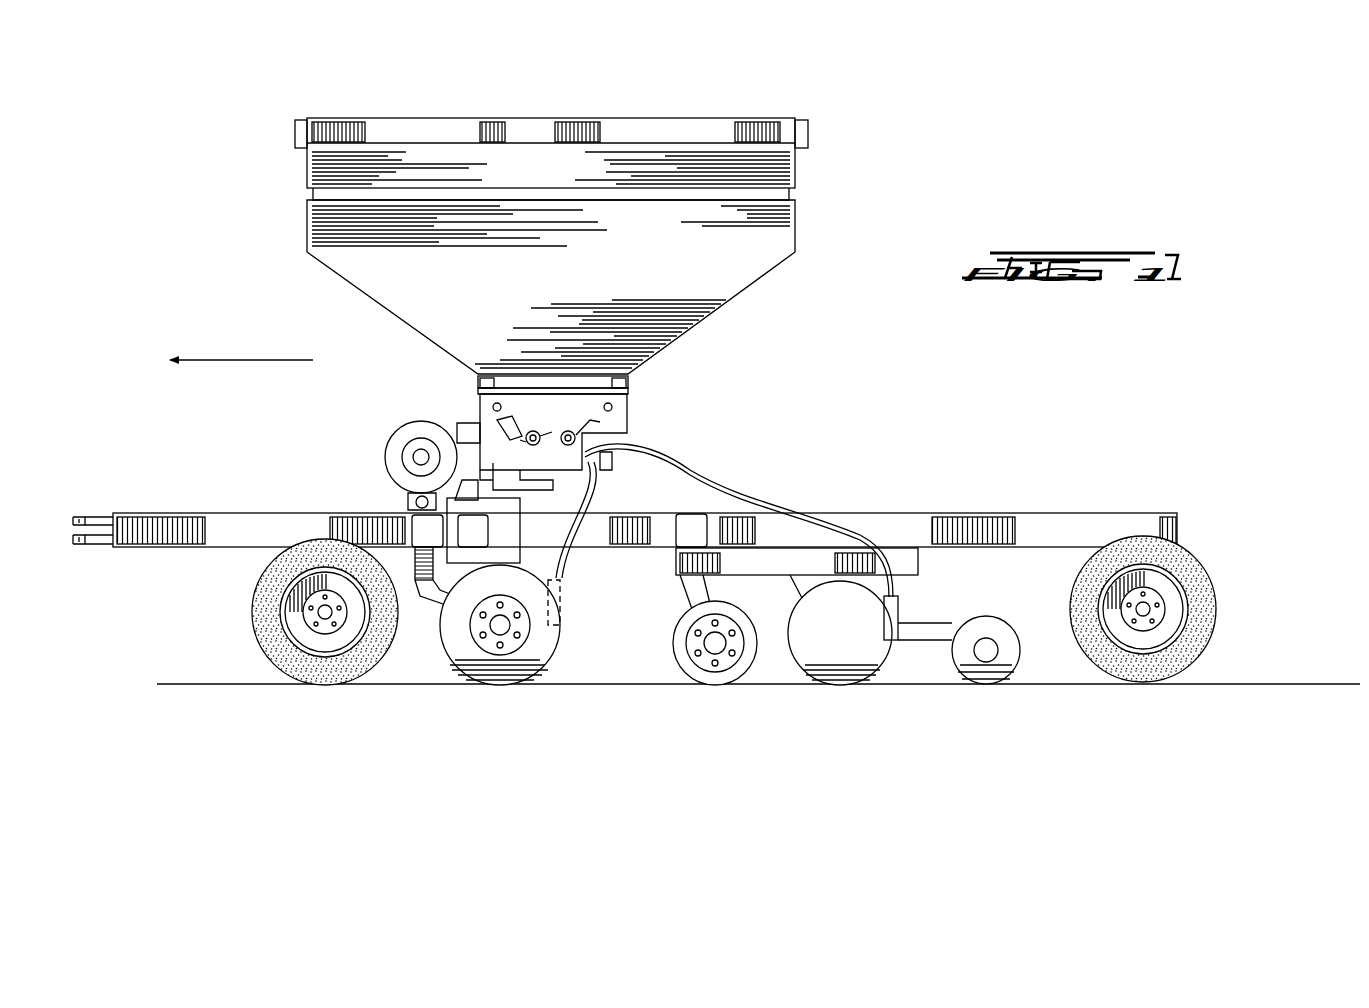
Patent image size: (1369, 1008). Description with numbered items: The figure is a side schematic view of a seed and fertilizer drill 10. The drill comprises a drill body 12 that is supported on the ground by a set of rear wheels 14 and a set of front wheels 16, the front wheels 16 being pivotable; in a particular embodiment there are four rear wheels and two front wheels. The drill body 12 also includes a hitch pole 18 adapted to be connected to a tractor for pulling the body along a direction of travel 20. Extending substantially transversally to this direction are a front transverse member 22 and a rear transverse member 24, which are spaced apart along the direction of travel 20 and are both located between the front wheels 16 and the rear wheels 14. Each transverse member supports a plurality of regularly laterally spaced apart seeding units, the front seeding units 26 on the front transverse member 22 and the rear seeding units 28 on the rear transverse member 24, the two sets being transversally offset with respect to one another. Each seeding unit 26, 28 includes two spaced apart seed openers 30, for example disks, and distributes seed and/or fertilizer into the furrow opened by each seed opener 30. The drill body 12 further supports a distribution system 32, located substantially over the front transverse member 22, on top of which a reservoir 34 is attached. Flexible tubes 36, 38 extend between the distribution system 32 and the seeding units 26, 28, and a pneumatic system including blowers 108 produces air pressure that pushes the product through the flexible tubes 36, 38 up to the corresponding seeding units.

The seed and fertilizer drill 10 is at (258, 194).
The drill body 12 is at (226, 510).
The rear wheels 14 is at (1190, 663).
The front wheels 16 is at (326, 668).
The hitch pole 18 is at (93, 545).
The direction of travel 20 is at (218, 360).
The front transverse member 22 is at (428, 532).
The rear transverse member 24 is at (688, 530).
The front seeding units 26 is at (552, 668).
The rear seeding units 28 is at (882, 668).
The seed openers 30 is at (508, 667).
The distribution system 32 is at (645, 386).
The reservoir 34 is at (798, 226).
The flexible tube 36 is at (560, 572).
The flexible tube 38 is at (828, 528).
The blowers 108 is at (398, 426).